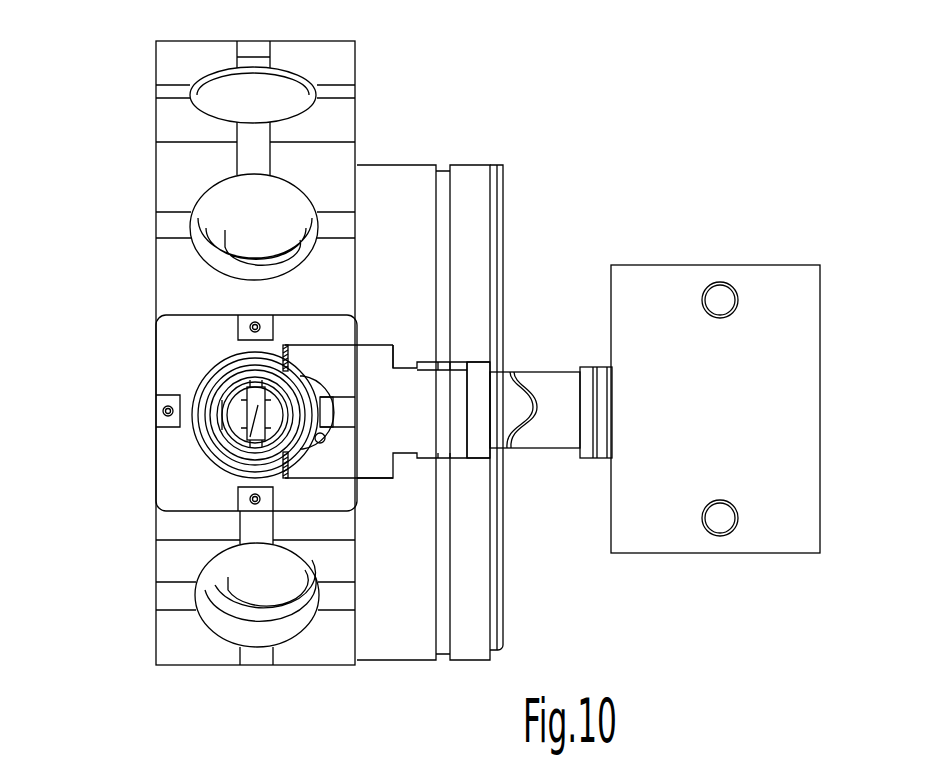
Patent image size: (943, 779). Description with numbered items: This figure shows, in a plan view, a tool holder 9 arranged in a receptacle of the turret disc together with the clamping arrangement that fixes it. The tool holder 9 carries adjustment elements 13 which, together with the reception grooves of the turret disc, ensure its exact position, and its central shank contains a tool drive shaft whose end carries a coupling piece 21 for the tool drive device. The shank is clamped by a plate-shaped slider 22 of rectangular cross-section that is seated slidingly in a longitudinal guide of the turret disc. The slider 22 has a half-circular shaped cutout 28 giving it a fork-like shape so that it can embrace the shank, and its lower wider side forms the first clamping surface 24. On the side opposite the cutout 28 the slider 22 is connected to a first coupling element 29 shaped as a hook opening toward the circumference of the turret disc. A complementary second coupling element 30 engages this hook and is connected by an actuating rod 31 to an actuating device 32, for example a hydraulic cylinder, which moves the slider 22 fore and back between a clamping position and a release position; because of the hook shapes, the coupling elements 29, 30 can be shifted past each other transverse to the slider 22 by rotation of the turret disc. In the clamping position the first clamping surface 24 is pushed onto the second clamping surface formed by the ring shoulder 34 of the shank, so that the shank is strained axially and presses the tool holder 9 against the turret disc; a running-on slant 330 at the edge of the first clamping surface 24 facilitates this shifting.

The tool holder 9 is at (200, 310).
The ring shoulder 34 is at (222, 367).
The adjustment elements 13 is at (225, 443).
The coupling piece 21 is at (258, 415).
The running-on slant 330 is at (281, 476).
The half-circular shaped cutout 28 is at (393, 347).
The slider 22 is at (333, 393).
The second coupling element 30 is at (473, 367).
The actuating rod 31 is at (563, 387).
The actuating device 32 is at (665, 272).
The first clamping surface 24 is at (383, 445).
The first coupling element 29 is at (438, 428).